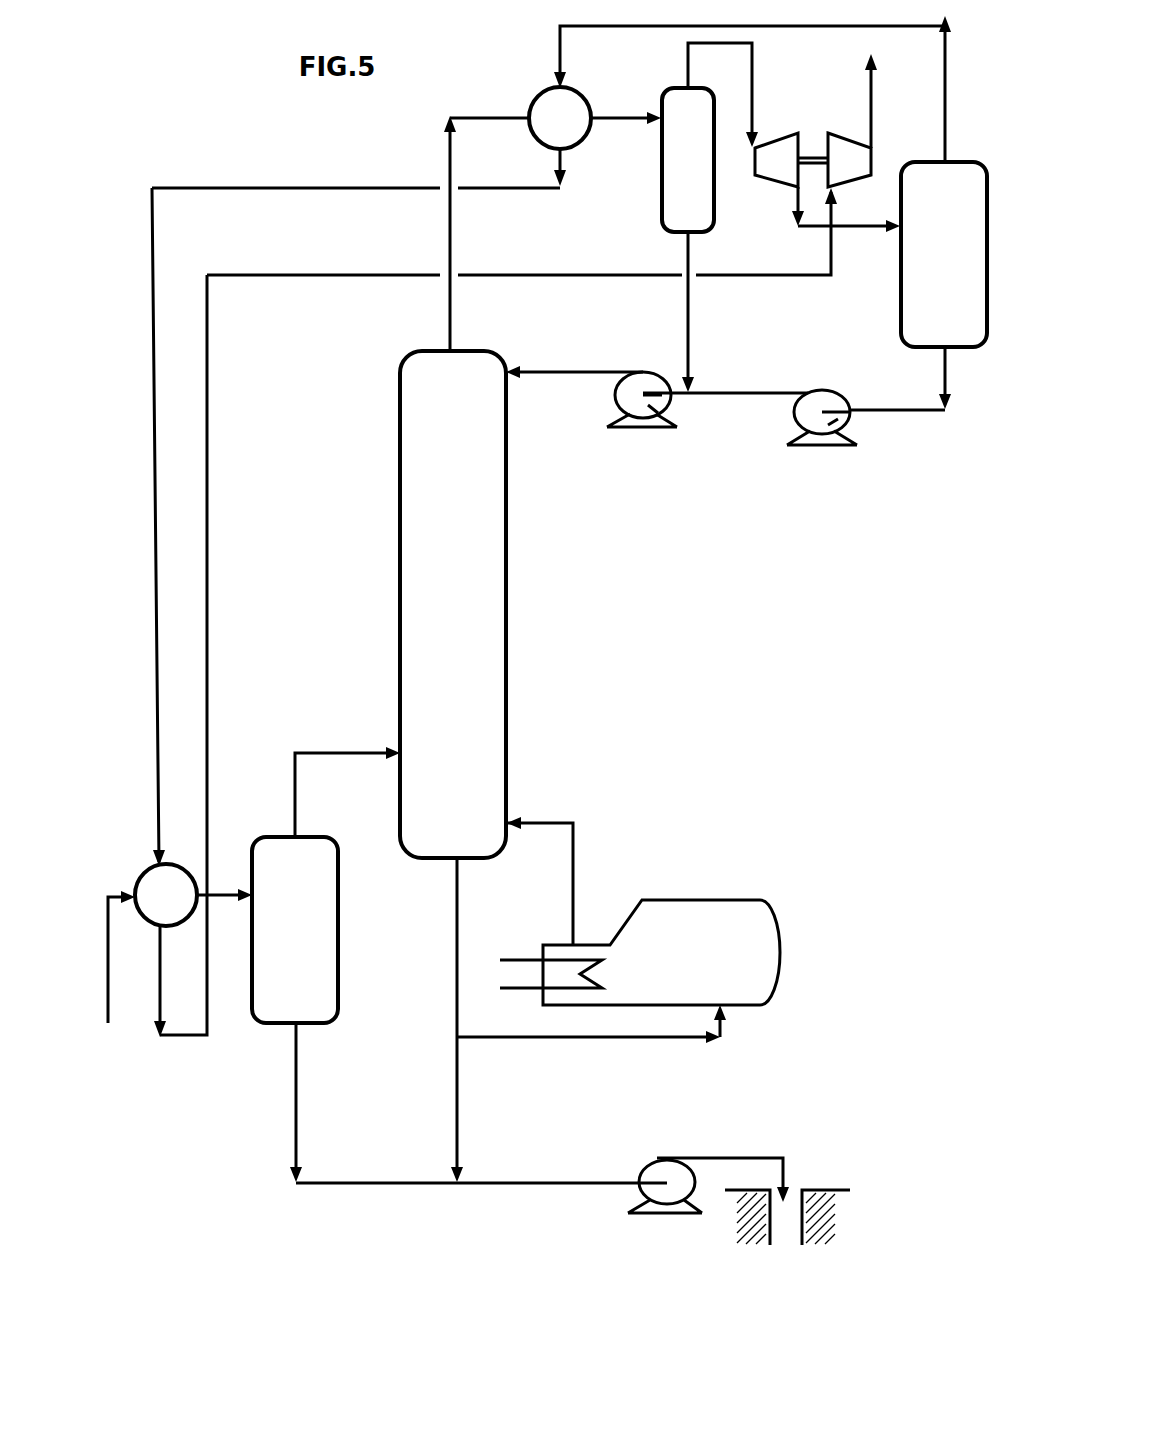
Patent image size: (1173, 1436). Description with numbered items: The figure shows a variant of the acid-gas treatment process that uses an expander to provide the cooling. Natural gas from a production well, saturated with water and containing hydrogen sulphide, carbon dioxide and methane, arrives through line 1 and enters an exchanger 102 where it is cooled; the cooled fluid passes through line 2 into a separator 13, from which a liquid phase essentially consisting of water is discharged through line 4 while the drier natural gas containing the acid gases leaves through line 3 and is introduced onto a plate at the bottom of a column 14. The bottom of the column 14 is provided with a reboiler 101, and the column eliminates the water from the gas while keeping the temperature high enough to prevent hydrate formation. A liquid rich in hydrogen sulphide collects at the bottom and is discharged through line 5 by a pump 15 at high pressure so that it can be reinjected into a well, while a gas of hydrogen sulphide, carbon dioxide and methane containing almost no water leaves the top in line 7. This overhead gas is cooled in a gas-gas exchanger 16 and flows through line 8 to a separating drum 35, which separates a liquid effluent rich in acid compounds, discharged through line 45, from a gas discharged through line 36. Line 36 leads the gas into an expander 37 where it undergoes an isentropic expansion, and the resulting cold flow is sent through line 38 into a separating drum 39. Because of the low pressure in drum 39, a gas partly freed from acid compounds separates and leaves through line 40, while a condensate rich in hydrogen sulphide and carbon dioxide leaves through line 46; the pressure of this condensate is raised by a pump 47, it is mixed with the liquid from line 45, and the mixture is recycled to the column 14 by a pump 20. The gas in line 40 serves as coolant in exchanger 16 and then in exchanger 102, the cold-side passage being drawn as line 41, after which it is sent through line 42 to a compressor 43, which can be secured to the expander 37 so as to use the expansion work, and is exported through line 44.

The line 1 is at (110, 988).
The line 2 is at (215, 890).
The line 3 is at (297, 772).
The line 4 is at (297, 1043).
The line 5 is at (545, 1180).
The line 7 is at (452, 228).
The line 8 is at (600, 104).
The separator 13 is at (275, 931).
The column 14 is at (438, 624).
The pump 15 is at (660, 1168).
The gas-gas exchanger 16 is at (548, 129).
The pump 20 is at (668, 410).
The separating drum 35 is at (676, 171).
The line 36 is at (755, 90).
The expander 37 is at (766, 171).
The line 38 is at (845, 232).
The separating drum 39 is at (935, 261).
The line 40 is at (928, 88).
The recycle line 41 is at (153, 206).
The line 42 is at (650, 272).
The compressor 43 is at (836, 171).
The line 44 is at (868, 84).
The line 45 is at (690, 318).
The line 46 is at (918, 413).
The pump 47 is at (845, 430).
The reboiler 101 is at (680, 958).
The exchanger 102 is at (148, 906).